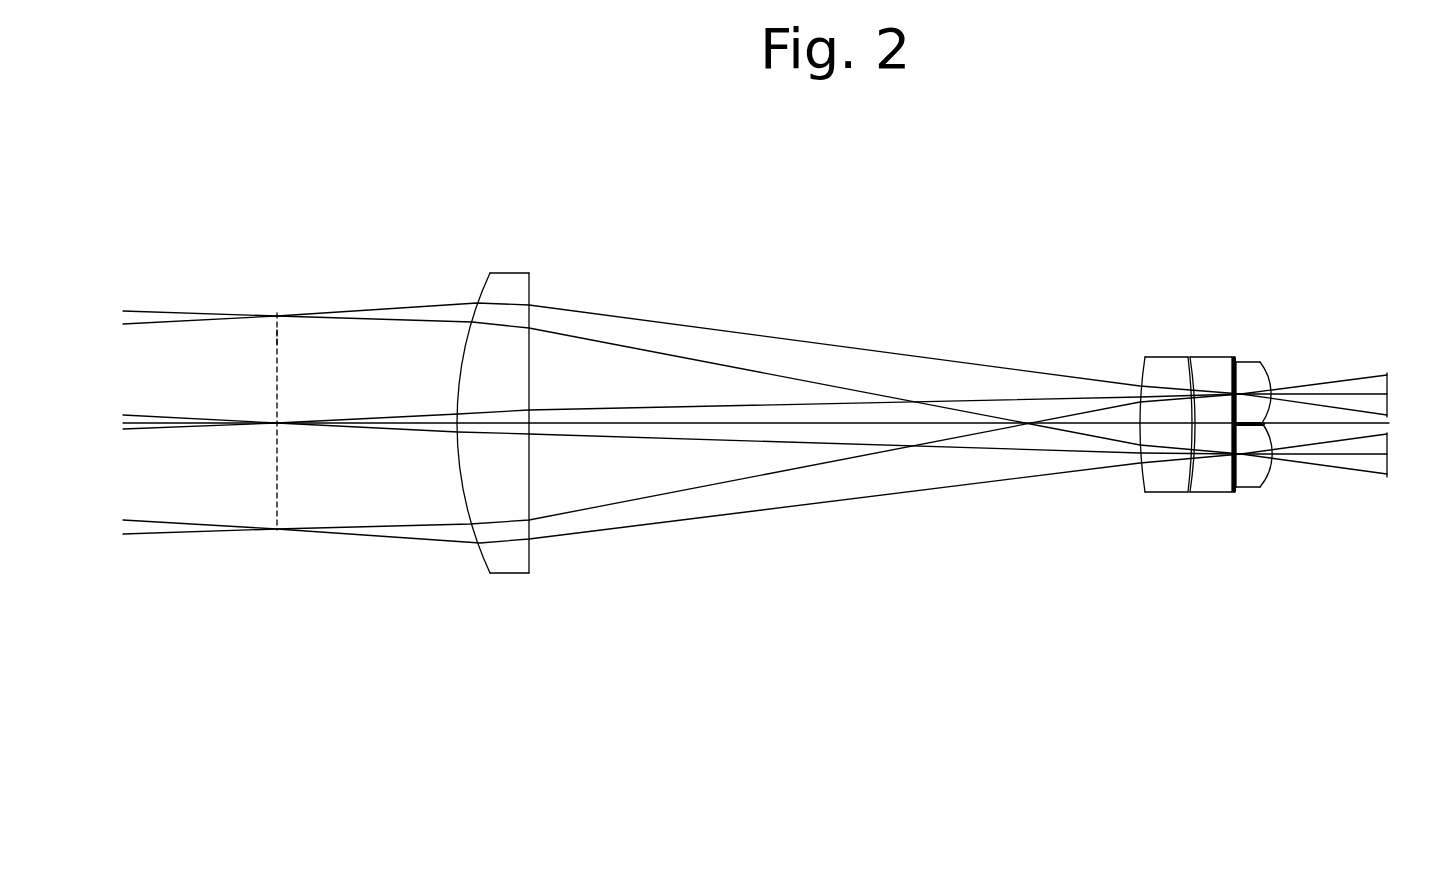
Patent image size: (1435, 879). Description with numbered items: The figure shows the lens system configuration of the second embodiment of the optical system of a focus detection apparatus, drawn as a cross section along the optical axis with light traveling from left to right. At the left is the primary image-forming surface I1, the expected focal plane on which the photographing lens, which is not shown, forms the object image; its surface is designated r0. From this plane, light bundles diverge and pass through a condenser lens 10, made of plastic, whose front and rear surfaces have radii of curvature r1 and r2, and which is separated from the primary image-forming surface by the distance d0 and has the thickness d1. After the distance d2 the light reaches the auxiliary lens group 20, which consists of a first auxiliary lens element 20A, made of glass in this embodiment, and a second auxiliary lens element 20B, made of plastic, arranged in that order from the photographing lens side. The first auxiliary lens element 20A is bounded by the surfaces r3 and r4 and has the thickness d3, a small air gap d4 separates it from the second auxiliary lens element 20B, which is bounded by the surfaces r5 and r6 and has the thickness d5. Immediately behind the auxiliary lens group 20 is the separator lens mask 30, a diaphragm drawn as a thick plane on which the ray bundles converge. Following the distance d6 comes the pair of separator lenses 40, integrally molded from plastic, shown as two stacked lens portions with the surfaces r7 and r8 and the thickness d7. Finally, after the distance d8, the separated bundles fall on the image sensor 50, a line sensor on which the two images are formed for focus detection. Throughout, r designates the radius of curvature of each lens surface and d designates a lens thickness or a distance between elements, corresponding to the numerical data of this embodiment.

The primary image-forming surface I1 is at (277, 313).
The radius of curvature of the primary image-forming surface r0 is at (281, 336).
The condenser lens 10 is at (504, 349).
The radius of curvature of the first surface of the condenser lens r1 is at (483, 290).
The radius of curvature of the second surface of the condenser lens r2 is at (530, 287).
The auxiliary lens group 20 is at (1152, 315).
The first auxiliary lens element 20A is at (1123, 339).
The second auxiliary lens element 20B is at (1215, 339).
The separator lens mask 30 is at (1236, 362).
The pair of separator lenses 40 is at (1295, 333).
The image sensor 50 is at (1387, 373).
The radius of curvature of the first surface of the first auxiliary lens element r3 is at (1143, 358).
The radius of curvature of the second surface of the first auxiliary lens element r4 is at (1187, 358).
The radius of curvature of the first surface of the second auxiliary lens element r5 is at (1205, 357).
The radius of curvature of the second surface of the second auxiliary lens element r6 is at (1235, 360).
The radius of curvature of the first surface of the separator lenses r7 is at (1256, 362).
The radius of curvature of the second surface of the separator lenses r8 is at (1270, 372).
The distance from the primary image-forming surface to the condenser lens d0 is at (417, 424).
The thickness of the condenser lens d1 is at (502, 426).
The distance from the condenser lens to the auxiliary lens group d2 is at (673, 424).
The thickness of the first auxiliary lens element d3 is at (1173, 426).
The distance between the first and second auxiliary lens elements d4 is at (1202, 426).
The thickness of the second auxiliary lens element d5 is at (1212, 426).
The distance from the separator lens mask to the separator lenses d6 is at (1240, 430).
The thickness of the separator lenses d7 is at (1255, 427).
The distance from the separator lenses to the image sensor d8 is at (1342, 427).